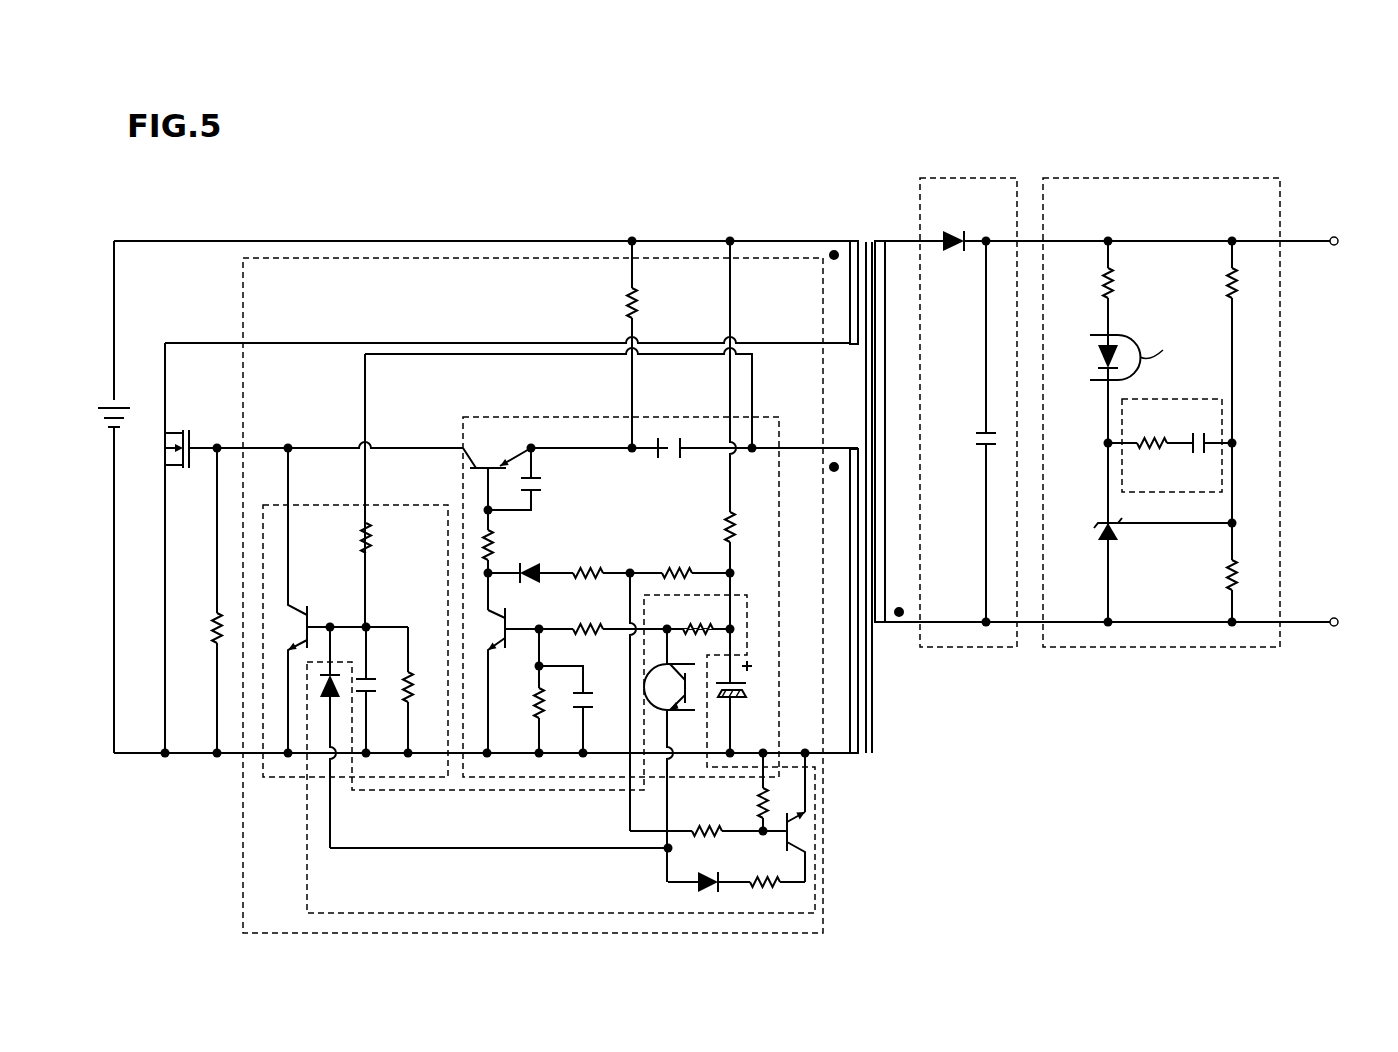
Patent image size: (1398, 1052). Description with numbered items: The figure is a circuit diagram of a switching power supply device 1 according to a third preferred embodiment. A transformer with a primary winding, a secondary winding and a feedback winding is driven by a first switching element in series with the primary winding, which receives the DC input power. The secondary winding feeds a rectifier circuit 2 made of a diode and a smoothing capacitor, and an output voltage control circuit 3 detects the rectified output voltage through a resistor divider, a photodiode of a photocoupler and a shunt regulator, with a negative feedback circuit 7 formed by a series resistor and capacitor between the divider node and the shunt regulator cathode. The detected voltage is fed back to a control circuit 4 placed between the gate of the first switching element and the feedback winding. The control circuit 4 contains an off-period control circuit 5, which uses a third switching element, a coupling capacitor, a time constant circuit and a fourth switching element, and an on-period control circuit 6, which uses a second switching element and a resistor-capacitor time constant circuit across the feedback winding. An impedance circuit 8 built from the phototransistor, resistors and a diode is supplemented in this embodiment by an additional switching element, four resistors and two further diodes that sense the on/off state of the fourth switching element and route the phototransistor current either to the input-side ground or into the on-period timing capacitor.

The switching power supply device 1 is at (392, 123).
The rectifier circuit 2 is at (967, 178).
The output voltage control circuit 3 is at (1178, 178).
The control circuit 4 is at (528, 258).
The off-period control circuit 5 is at (528, 417).
The on-period control circuit 6 is at (318, 505).
The negative feedback circuit 7 is at (1212, 399).
The impedance circuit 8 is at (823, 892).